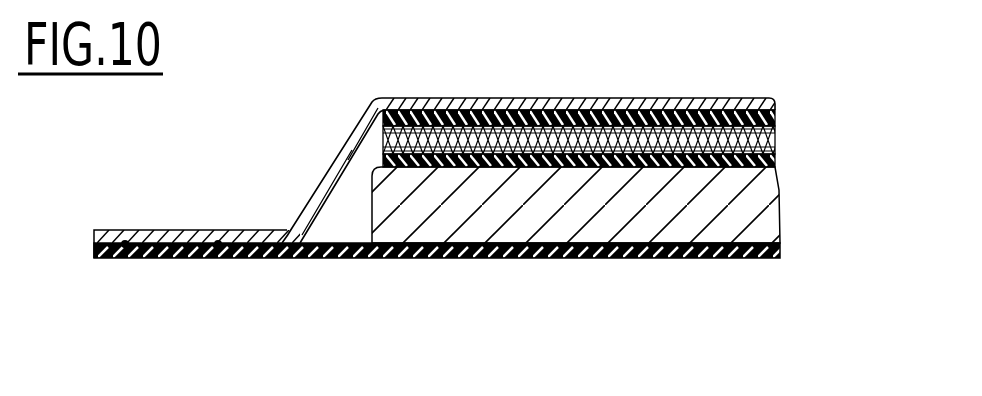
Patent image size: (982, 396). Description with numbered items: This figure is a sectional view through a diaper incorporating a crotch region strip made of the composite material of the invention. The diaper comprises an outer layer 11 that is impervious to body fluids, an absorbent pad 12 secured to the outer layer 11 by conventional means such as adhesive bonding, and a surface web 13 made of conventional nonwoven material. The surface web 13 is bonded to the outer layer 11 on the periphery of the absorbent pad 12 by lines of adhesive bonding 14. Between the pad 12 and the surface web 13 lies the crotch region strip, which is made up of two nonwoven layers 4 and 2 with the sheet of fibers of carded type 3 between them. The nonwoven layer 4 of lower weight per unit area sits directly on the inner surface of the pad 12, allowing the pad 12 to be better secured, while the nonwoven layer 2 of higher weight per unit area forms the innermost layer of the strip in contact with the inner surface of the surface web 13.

The nonwoven layer of higher weight per unit area 2 is at (775, 117).
The sheet of fibers of carded type 3 is at (775, 140).
The nonwoven layer of lower weight per unit area 4 is at (775, 158).
The outer layer 11 is at (506, 252).
The absorbent pad 12 is at (630, 200).
The surface web 13 is at (495, 107).
The lines of adhesive bonding 14 is at (125, 246).